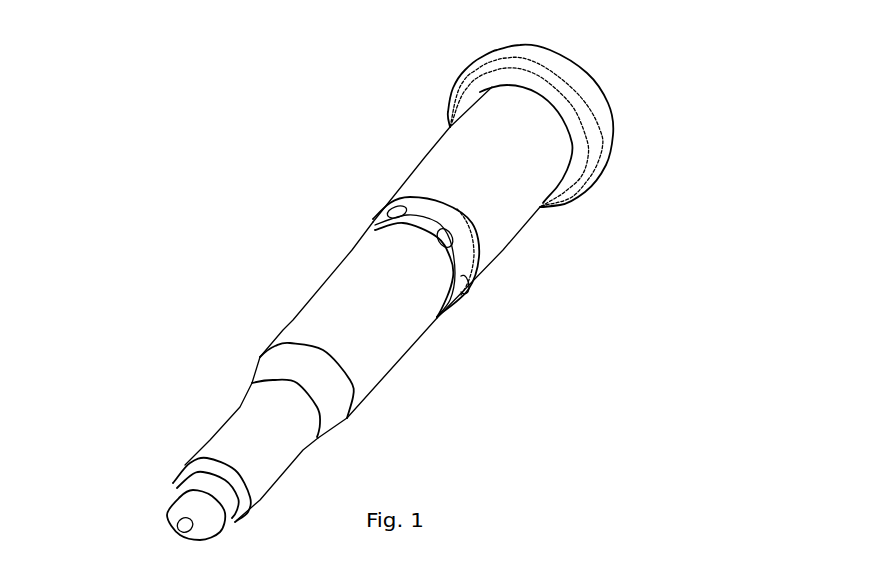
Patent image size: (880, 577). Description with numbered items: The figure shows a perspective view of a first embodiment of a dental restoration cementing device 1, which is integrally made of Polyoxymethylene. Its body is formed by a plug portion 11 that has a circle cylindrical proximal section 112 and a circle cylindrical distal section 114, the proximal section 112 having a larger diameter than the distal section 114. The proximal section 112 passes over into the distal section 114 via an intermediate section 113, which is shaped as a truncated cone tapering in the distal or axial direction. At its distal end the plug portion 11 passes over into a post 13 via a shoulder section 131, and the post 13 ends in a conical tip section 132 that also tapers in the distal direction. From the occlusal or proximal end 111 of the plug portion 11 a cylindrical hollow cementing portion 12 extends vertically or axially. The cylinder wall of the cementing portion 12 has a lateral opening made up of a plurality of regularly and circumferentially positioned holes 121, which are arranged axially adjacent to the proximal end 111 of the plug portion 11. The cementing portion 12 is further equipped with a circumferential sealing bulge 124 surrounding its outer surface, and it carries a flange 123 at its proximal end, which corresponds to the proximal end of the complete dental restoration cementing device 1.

The dental restoration cementing device 1 is at (399, 142).
The plug portion 11 is at (421, 360).
The cementing portion 12 is at (533, 227).
The post 13 is at (161, 509).
The proximal end 111 is at (367, 225).
The proximal section 112 is at (310, 317).
The intermediate section 113 is at (262, 358).
The distal section 114 is at (247, 417).
The holes 121 is at (377, 210).
The flange 123 is at (597, 113).
The circumferential sealing bulge 124 is at (468, 245).
The shoulder section 131 is at (190, 467).
The conical tip section 132 is at (170, 500).